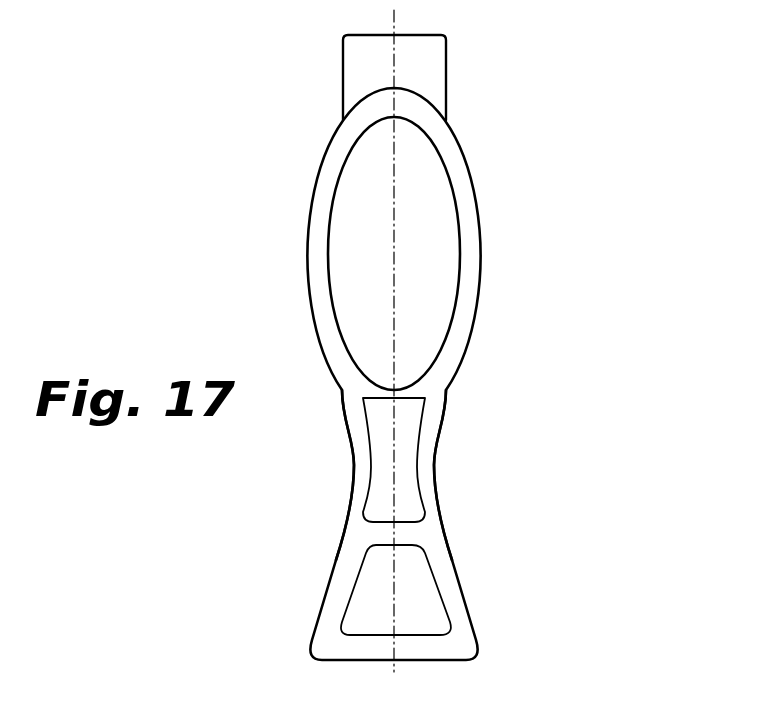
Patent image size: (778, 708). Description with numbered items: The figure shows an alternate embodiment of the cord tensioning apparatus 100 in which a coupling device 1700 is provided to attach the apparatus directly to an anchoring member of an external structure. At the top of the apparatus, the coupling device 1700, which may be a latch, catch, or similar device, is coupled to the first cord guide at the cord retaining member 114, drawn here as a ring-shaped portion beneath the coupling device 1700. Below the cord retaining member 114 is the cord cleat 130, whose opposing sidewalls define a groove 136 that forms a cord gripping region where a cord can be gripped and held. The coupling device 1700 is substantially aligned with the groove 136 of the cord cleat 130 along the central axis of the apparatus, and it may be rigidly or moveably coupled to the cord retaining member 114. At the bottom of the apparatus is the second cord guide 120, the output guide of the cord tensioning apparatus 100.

The cord tensioning apparatus 100 is at (588, 118).
The cord retaining member 114 is at (447, 148).
The coupling device 1700 is at (338, 48).
The groove 136 is at (383, 420).
The cord cleat 130 is at (452, 442).
The second cord guide 120 is at (479, 572).